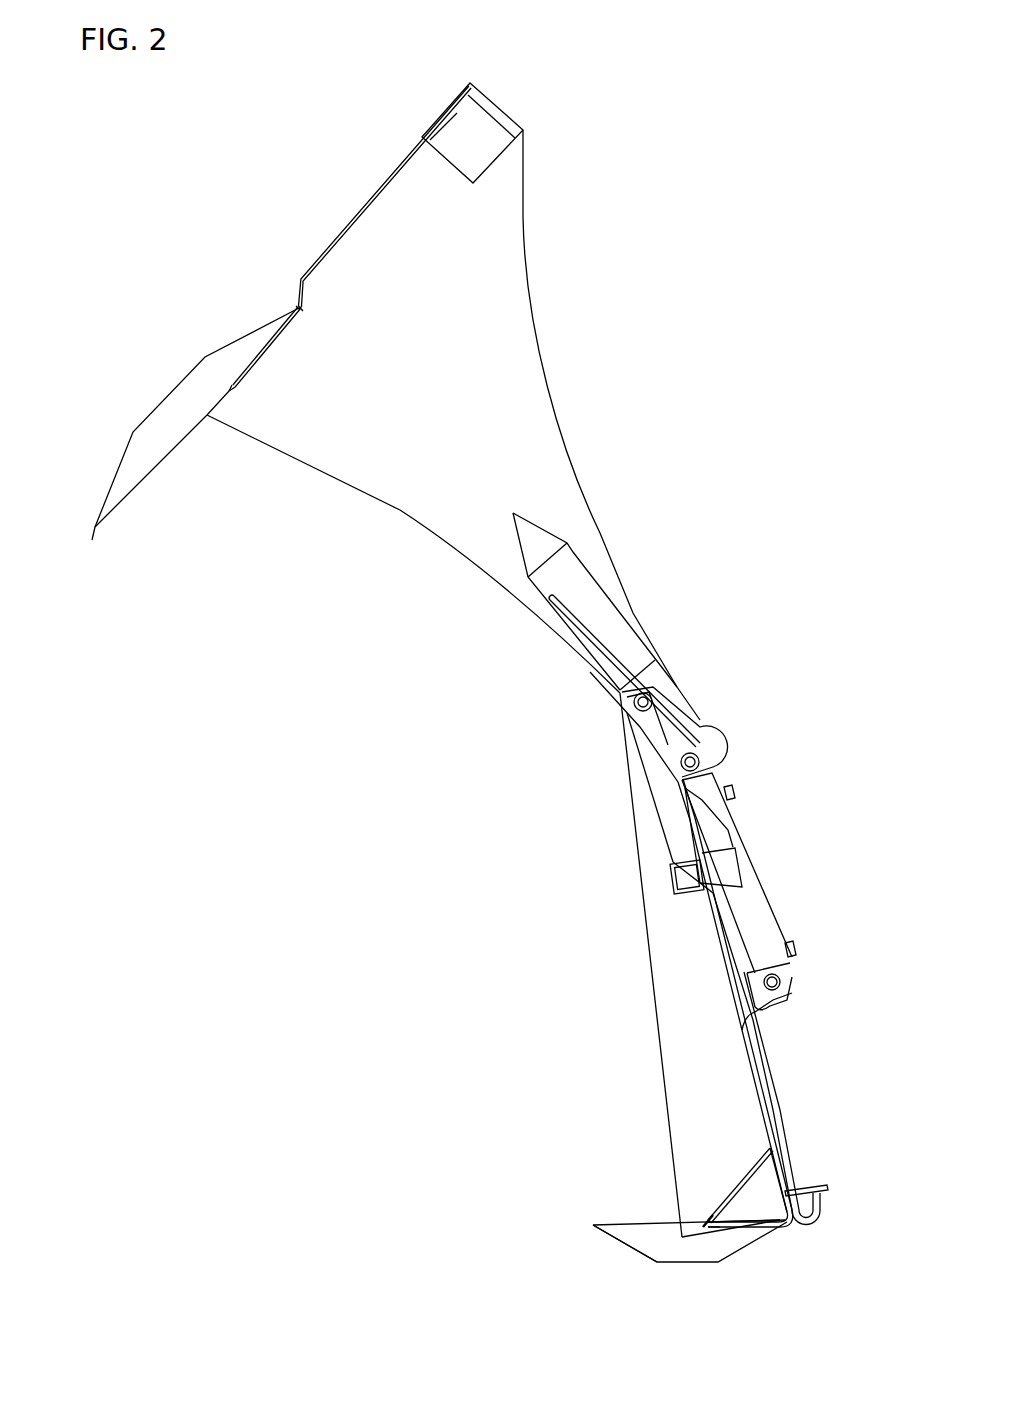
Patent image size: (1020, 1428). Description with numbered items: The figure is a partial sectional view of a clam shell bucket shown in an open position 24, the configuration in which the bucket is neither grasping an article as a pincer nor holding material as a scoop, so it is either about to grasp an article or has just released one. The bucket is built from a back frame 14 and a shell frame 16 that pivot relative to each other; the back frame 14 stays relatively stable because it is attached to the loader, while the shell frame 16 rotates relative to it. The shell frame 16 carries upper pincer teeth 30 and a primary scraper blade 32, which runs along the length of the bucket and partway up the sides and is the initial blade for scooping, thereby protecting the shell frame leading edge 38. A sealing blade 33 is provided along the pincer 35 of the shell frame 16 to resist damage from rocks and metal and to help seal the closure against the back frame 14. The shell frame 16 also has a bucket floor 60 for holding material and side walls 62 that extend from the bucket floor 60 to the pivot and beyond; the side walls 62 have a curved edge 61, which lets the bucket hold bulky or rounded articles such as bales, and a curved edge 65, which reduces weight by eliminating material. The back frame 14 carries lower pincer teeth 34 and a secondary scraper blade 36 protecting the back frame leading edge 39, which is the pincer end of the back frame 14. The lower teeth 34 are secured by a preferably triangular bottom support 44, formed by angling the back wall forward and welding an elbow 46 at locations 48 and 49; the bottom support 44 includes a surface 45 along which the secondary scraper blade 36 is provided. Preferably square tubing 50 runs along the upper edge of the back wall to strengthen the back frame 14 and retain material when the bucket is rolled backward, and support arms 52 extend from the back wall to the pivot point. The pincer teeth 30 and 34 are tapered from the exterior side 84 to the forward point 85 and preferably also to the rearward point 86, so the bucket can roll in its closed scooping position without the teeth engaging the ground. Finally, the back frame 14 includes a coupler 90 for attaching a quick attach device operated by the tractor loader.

The back frame 14 is at (790, 1030).
The shell frame 16 is at (593, 302).
The open position 24 is at (645, 422).
The upper pincer teeth 30 is at (160, 413).
The primary scraper blade 32 is at (468, 83).
The sealing blade 33 is at (228, 402).
The lower pincer teeth 34 is at (647, 1245).
The pincer 35 is at (207, 422).
The secondary scraper blade 36 is at (720, 1207).
The shell frame leading edge 38 is at (493, 75).
The back frame leading edge 39 is at (660, 1208).
The bottom support 44 is at (780, 1177).
The surface 45 is at (752, 1170).
The elbow 46 is at (768, 1222).
The location 48 is at (773, 1137).
The location 49 is at (717, 1223).
The tubing 50 is at (672, 882).
The support arms 52 is at (667, 795).
The bucket floor 60 is at (362, 213).
The curved edge 61 is at (432, 535).
The side walls 62 is at (483, 228).
The curved edge 65 is at (548, 405).
The exterior side 84 is at (197, 365).
The forward point 85 is at (95, 530).
The rearward point 86 is at (298, 308).
The coupler 90 is at (834, 1170).